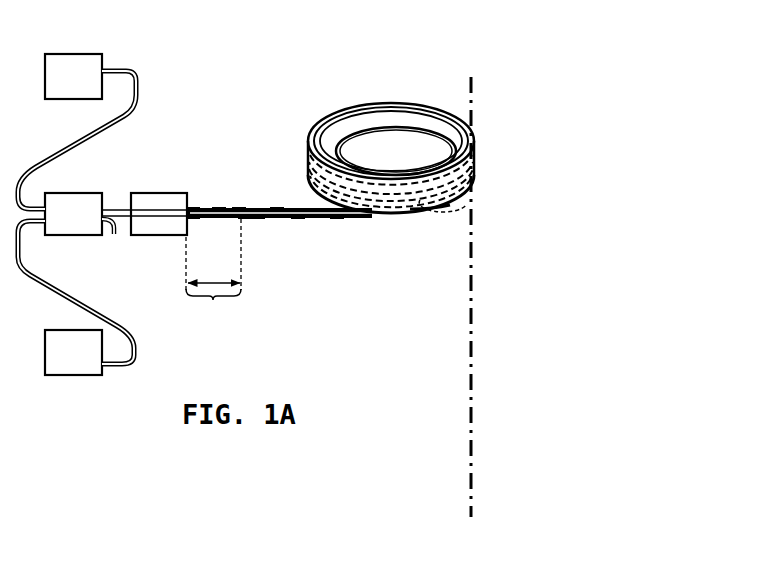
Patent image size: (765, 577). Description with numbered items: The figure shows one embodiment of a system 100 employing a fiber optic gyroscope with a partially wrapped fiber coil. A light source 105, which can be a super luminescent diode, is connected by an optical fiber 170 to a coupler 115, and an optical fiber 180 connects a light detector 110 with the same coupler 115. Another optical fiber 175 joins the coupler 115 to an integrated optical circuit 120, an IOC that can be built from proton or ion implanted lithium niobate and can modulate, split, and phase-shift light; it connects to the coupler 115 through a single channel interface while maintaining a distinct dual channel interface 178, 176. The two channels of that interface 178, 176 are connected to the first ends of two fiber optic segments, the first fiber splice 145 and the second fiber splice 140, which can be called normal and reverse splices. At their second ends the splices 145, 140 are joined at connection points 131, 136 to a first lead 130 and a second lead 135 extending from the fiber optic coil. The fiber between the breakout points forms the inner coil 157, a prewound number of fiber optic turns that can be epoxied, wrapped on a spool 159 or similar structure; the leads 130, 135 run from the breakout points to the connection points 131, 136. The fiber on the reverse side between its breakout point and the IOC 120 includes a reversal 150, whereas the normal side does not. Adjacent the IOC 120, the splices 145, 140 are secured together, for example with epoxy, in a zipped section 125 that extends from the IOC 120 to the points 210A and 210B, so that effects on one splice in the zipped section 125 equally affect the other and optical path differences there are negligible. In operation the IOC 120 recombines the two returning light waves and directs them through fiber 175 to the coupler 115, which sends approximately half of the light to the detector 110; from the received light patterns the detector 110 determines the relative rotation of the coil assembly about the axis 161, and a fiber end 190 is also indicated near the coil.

The system 100 is at (58, 31).
The light source 105 is at (73, 76).
The light detector 110 is at (73, 352).
The coupler 115 is at (79, 214).
The integrated optical circuit 120 is at (159, 214).
The zipped section 125 is at (213, 268).
The first lead 130 is at (300, 206).
The connection point 131 is at (277, 206).
The second lead 135 is at (337, 221).
The connection point 136 is at (298, 221).
The second fiber splice 140 is at (219, 206).
The first fiber splice 145 is at (258, 221).
The reversal 150 is at (451, 207).
The inner coil 157 is at (347, 190).
The spool 159 is at (426, 127).
The axis 161 is at (478, 417).
The optical fiber 170 is at (144, 91).
The optical fiber 175 is at (115, 205).
The dual channel interface 176 is at (188, 221).
The dual channel interface 178 is at (190, 205).
The optical fiber 180 is at (141, 348).
The fiber end 190 is at (432, 217).
The zipped section end point 210A is at (245, 221).
The zipped section end point 210B is at (239, 206).